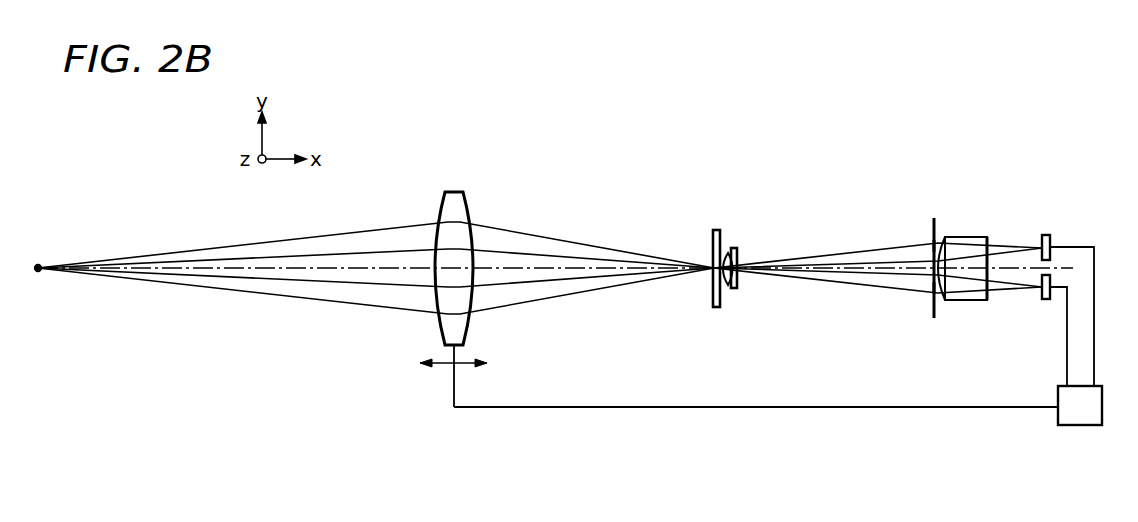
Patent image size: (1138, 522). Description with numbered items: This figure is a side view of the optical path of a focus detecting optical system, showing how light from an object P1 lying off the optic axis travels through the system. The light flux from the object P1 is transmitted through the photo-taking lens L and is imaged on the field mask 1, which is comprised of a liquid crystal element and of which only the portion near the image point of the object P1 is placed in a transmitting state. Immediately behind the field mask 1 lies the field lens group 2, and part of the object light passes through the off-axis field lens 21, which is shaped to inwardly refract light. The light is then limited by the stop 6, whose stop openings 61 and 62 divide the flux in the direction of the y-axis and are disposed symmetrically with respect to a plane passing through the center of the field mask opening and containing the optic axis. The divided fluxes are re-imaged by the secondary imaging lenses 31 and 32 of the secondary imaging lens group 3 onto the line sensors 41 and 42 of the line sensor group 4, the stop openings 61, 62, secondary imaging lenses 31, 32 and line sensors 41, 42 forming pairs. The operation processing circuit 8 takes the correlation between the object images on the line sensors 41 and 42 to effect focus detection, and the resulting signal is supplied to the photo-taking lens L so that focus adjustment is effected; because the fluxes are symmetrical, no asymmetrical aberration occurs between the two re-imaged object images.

The object P1 is at (39, 254).
The photo-taking lens L is at (456, 192).
The field mask 1 is at (716, 229).
The field lens group 2 is at (733, 248).
The field lens 21 is at (731, 287).
The stop 6 is at (934, 220).
The stop opening 61 is at (932, 250).
The stop opening 62 is at (933, 284).
The secondary imaging lens group 3 is at (966, 237).
The secondary imaging lens 31 is at (987, 241).
The secondary imaging lens 32 is at (988, 297).
The line sensor group 4 is at (1062, 261).
The line sensor 41 is at (1050, 240).
The line sensor 42 is at (1046, 299).
The operation processing circuit 8 is at (1080, 426).